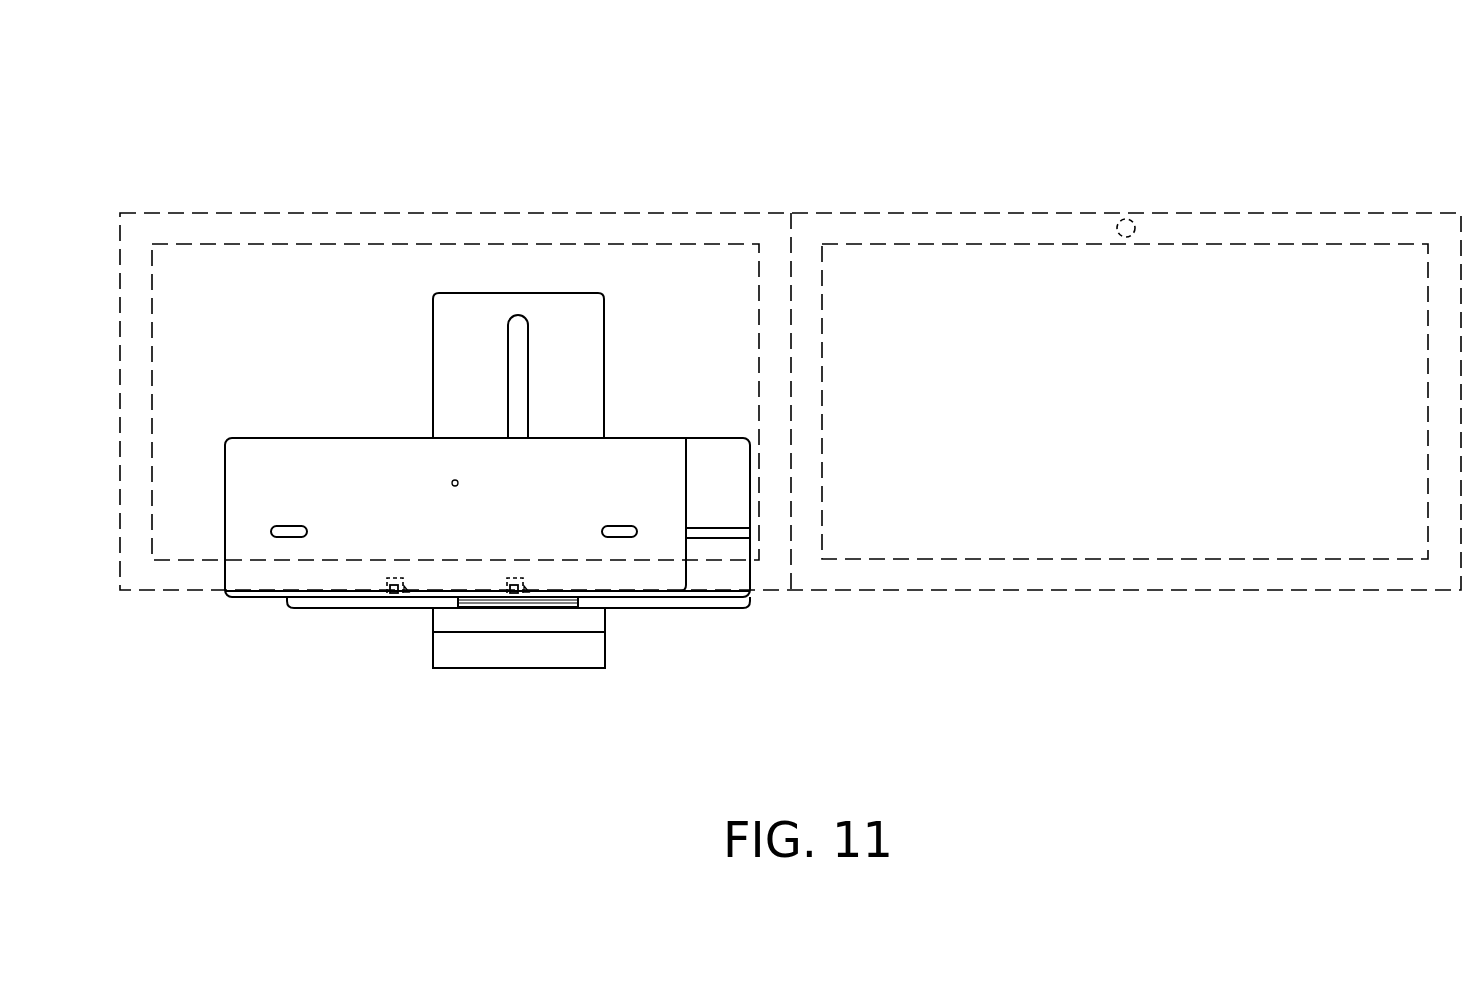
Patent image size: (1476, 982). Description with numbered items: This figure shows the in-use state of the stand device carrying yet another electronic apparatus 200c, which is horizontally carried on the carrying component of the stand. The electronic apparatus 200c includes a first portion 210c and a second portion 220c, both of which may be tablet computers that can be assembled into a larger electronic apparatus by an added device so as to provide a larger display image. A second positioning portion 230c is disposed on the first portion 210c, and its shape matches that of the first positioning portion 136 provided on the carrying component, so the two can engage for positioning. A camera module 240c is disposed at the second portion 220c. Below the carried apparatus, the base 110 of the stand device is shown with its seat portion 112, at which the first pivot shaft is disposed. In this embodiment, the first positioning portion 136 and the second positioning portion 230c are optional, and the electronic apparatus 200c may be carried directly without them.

The electronic apparatus 200c is at (188, 128).
The first portion 210c is at (461, 222).
The second portion 220c is at (980, 220).
The camera module 240c is at (1126, 219).
The base 110 is at (618, 672).
The seat portion 112 is at (575, 662).
The first positioning portion 136 is at (395, 593).
The second positioning portion 230c is at (417, 593).